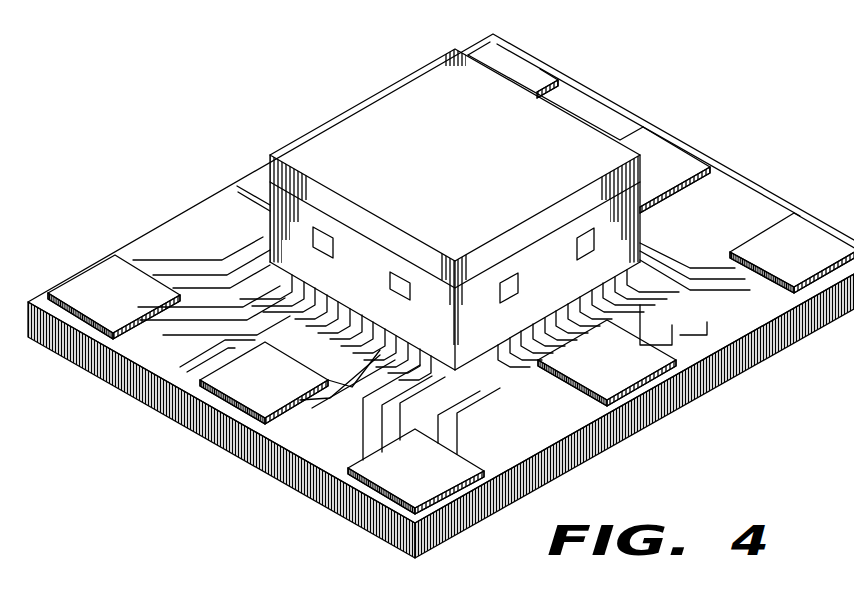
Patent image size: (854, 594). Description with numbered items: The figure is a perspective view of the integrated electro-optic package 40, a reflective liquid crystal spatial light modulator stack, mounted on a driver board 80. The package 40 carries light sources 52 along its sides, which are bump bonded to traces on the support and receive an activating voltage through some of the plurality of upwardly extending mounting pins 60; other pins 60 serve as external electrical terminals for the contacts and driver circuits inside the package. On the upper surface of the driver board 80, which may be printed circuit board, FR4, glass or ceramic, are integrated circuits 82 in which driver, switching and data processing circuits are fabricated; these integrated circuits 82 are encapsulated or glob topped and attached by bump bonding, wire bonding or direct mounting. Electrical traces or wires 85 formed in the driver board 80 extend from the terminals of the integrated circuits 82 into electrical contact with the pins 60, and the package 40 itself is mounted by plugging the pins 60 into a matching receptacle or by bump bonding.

The integrated electro-optic package 40 is at (441, 209).
The light sources 52 is at (577, 246).
The mounting pins 60 is at (630, 279).
The driver board 80 is at (751, 181).
The integrated circuits 82 is at (131, 301).
The conductive traces 85 is at (671, 250).